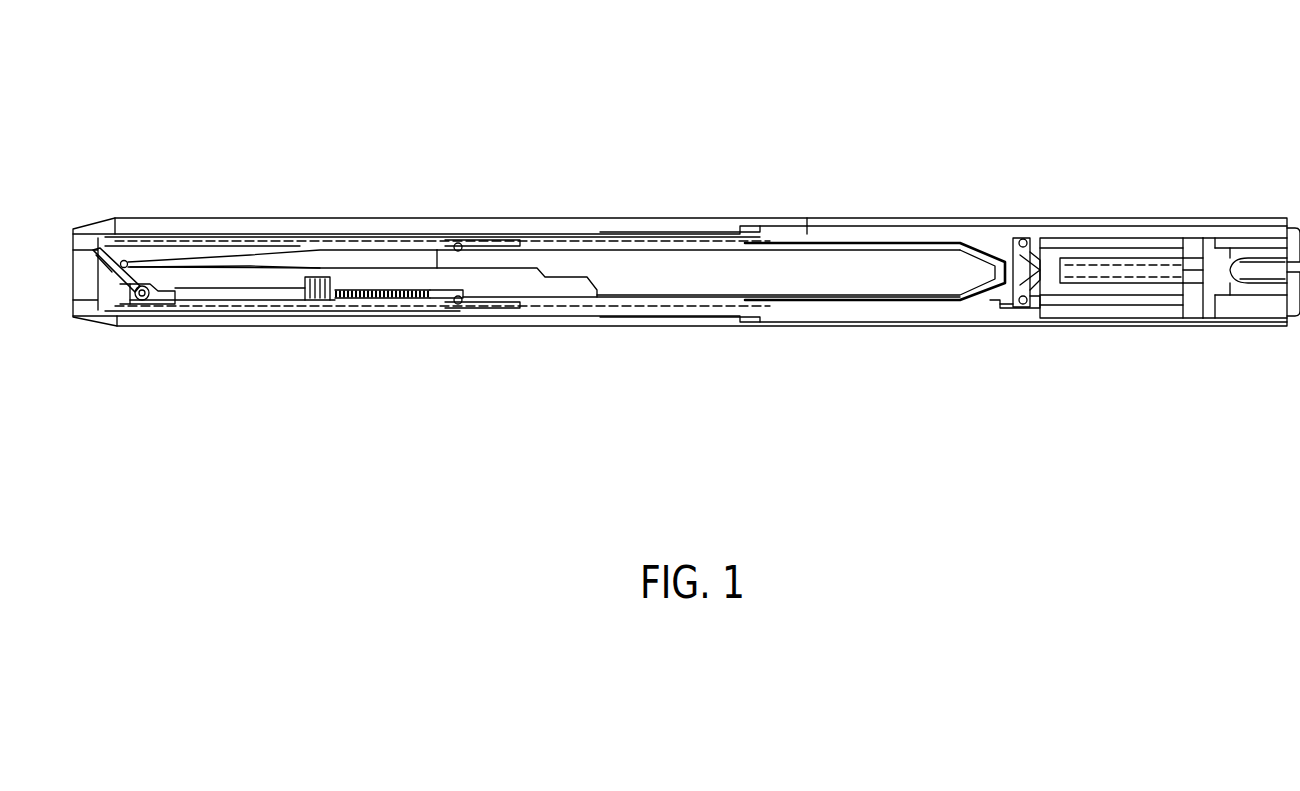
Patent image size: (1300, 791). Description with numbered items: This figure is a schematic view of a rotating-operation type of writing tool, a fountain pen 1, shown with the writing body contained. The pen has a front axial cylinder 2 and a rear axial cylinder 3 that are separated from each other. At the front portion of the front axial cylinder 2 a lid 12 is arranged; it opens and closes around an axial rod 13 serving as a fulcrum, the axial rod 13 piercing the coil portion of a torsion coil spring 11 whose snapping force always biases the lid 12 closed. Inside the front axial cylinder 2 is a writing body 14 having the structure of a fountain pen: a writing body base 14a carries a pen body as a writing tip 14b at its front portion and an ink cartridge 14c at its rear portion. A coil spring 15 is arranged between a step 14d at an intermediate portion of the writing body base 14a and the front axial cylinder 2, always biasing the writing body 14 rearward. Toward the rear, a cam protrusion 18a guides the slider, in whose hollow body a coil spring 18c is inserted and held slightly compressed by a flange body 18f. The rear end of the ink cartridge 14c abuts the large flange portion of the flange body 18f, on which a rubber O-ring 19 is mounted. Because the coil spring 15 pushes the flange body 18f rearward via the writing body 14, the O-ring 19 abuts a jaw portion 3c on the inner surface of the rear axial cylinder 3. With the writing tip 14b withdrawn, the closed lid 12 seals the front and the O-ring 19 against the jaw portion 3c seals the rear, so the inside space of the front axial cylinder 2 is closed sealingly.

The fountain pen 1 is at (242, 130).
The front axial cylinder 2 is at (713, 218).
The rear axial cylinder 3 is at (1259, 218).
The jaw portion 3c is at (1000, 304).
The torsion coil spring 11 is at (140, 291).
The lid 12 is at (93, 253).
The axial rod 13 is at (152, 302).
The writing body 14 is at (406, 292).
The writing body base 14a is at (362, 287).
The writing tip 14b is at (127, 258).
The ink cartridge 14c is at (725, 282).
The step 14d is at (462, 243).
The coil spring 15 is at (358, 240).
The cam protrusion 18a is at (1200, 238).
The coil spring 18c is at (1120, 260).
The flange body 18f is at (1040, 300).
The O-ring 19 is at (1030, 234).